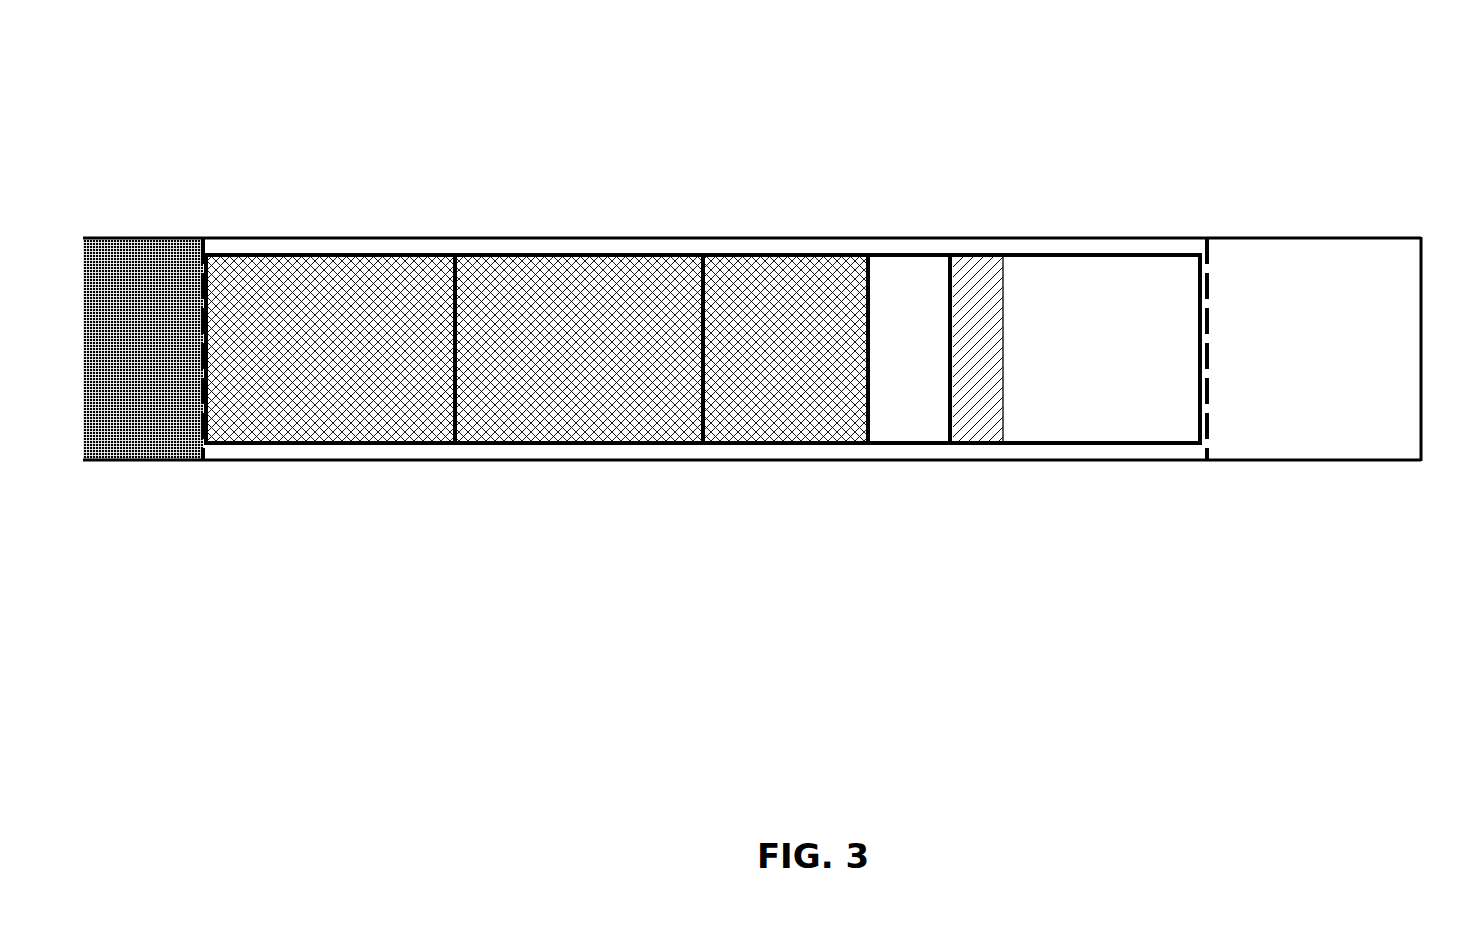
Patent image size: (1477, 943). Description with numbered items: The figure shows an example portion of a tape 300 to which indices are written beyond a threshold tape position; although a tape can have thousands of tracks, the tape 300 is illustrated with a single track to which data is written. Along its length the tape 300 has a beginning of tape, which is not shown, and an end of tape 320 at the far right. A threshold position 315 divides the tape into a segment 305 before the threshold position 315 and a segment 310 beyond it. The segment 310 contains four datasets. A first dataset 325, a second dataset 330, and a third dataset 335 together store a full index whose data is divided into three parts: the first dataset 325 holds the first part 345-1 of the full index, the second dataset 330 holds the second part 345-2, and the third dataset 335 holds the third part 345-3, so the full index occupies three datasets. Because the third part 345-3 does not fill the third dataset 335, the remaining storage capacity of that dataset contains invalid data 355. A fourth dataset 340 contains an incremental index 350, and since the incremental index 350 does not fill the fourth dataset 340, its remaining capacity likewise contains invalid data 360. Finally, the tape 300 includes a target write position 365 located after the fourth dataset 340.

The tape 300 is at (144, 0).
The segment before threshold position 305 is at (125, 360).
The segment beyond threshold position 310 is at (1326, 360).
The threshold position 315 is at (203, 225).
The end of tape 320 is at (1421, 225).
The first dataset 325 is at (318, 242).
The second dataset 330 is at (570, 242).
The third dataset 335 is at (810, 242).
The fourth dataset 340 is at (1058, 242).
The first part of full index 345-1 is at (300, 360).
The second part of full index 345-2 is at (546, 360).
The third part of full index 345-3 is at (747, 360).
The incremental index 350 is at (958, 360).
The invalid data 355 is at (883, 360).
The invalid data 360 is at (1075, 360).
The target write position 365 is at (1207, 225).